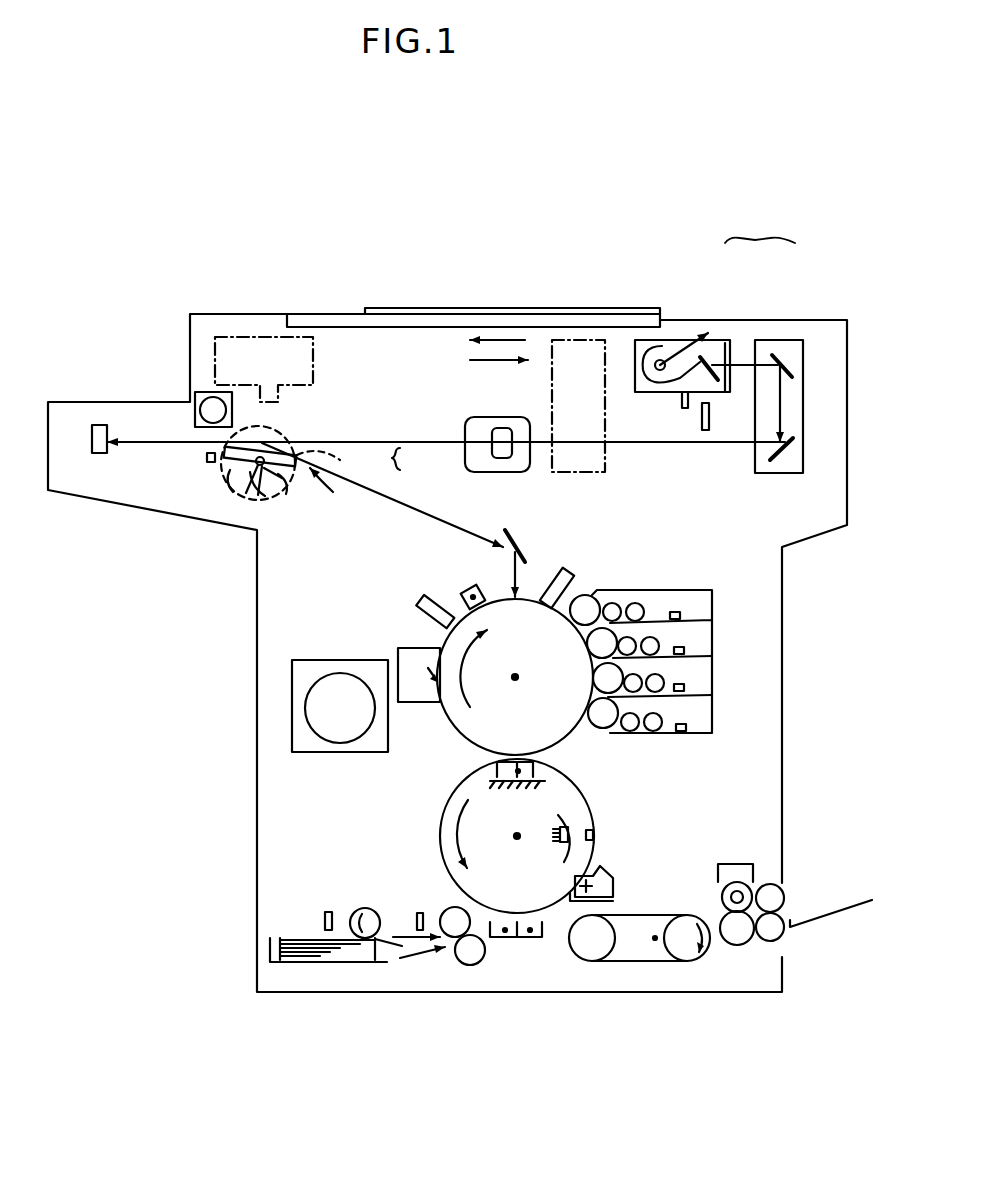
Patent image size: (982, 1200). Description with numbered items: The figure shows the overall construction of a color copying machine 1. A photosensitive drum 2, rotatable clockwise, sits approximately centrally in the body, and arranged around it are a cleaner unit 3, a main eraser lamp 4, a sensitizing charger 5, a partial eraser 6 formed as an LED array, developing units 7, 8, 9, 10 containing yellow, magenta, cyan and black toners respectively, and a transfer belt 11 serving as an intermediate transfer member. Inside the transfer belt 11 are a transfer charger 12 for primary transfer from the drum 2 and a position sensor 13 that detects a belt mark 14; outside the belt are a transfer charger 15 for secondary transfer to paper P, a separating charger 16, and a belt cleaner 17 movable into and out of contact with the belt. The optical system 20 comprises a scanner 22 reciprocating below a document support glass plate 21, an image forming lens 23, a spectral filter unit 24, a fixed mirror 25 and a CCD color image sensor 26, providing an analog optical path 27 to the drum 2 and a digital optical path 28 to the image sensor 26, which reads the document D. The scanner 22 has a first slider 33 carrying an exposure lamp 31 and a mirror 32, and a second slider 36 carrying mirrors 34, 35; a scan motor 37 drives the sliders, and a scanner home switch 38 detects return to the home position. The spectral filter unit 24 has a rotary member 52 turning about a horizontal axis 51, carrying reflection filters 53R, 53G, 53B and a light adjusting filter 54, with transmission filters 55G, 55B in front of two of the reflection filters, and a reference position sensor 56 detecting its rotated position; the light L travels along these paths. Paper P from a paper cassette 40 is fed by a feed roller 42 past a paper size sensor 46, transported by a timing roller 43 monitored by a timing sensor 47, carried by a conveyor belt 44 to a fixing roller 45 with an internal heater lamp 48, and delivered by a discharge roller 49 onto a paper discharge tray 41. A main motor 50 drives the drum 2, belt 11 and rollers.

The color copying machine 1 is at (408, 278).
The photosensitive drum 2 is at (503, 592).
The cleaner unit 3 is at (398, 652).
The main eraser lamp 4 is at (420, 600).
The sensitizing charger 5 is at (465, 592).
The partial eraser 6 is at (565, 575).
The developing unit 7 is at (712, 600).
The developing unit 8 is at (712, 638).
The developing unit 9 is at (712, 675).
The developing unit 10 is at (712, 715).
The transfer belt 11 is at (443, 815).
The transfer charger 12 is at (490, 765).
The position sensor 13 is at (566, 855).
The belt mark 14 is at (587, 830).
The transfer charger 15 is at (503, 938).
The separating charger 16 is at (534, 938).
The belt cleaner 17 is at (615, 890).
The optical system 20 is at (437, 405).
The document support glass plate 21 is at (372, 328).
The scanner 22 is at (760, 223).
The image forming lens 23 is at (505, 472).
The spectral filter unit 24 is at (340, 492).
The fixed mirror 25 is at (520, 540).
The CCD color image sensor 26 is at (100, 455).
The analog optical path 27 is at (427, 447).
The digital optical path 28 is at (147, 438).
The exposure lamp 31 is at (660, 358).
The mirror 32 is at (715, 378).
The first slider 33 is at (725, 340).
The mirror 34 is at (795, 372).
The mirror 35 is at (796, 445).
The second slider 36 is at (790, 340).
The scan motor 37 is at (207, 405).
The scanner home switch 38 is at (702, 420).
The paper cassette 40 is at (330, 963).
The paper discharge tray 41 is at (805, 925).
The feed roller 42 is at (366, 908).
The timing roller 43 is at (463, 965).
The conveyor belt 44 is at (648, 962).
The fixing roller 45 is at (718, 882).
The paper size sensor 46 is at (328, 912).
The timing sensor 47 is at (420, 913).
The heater lamp 48 is at (722, 897).
The discharge roller 49 is at (778, 895).
The main motor 50 is at (333, 690).
The horizontal axis 51 is at (244, 490).
The rotary member 52 is at (296, 463).
The reflection filter 53R is at (229, 473).
The reflection filter 53G is at (264, 494).
The reflection filter 53B is at (284, 478).
The light adjusting filter 54 is at (262, 447).
The transmission filter 55G is at (252, 490).
The transmission filter 55B is at (286, 492).
The reference position sensor 56 is at (207, 458).
The document D is at (475, 308).
The light beam L is at (398, 469).
The paper P is at (295, 938).